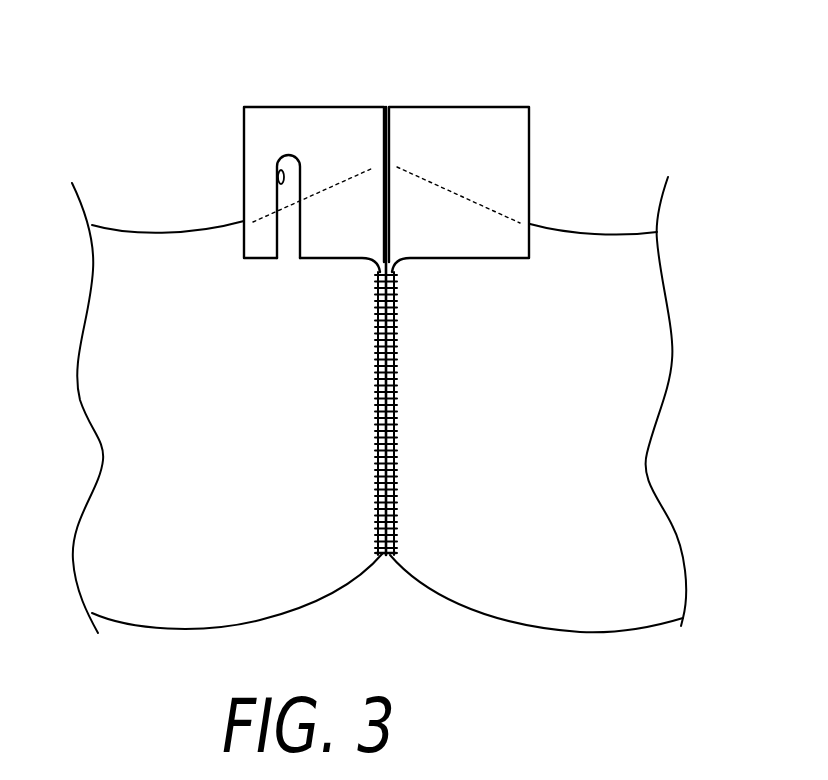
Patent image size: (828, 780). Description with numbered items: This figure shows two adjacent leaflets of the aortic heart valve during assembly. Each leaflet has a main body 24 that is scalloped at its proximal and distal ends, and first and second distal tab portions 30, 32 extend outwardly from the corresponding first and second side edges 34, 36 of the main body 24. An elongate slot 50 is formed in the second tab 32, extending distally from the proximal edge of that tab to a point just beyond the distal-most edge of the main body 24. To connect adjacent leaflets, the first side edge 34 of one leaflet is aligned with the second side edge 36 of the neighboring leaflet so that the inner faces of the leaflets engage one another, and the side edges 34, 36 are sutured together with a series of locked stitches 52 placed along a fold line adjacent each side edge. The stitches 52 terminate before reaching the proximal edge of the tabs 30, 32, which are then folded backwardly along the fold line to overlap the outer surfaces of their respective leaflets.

The main body 24 is at (173, 415).
The first distal tab portion 30 is at (462, 122).
The second distal tab portion 32 is at (303, 120).
The first side edge 34 is at (398, 540).
The second side edge 36 is at (373, 547).
The elongate slot 50 is at (280, 186).
The locked stitches 52 is at (398, 435).